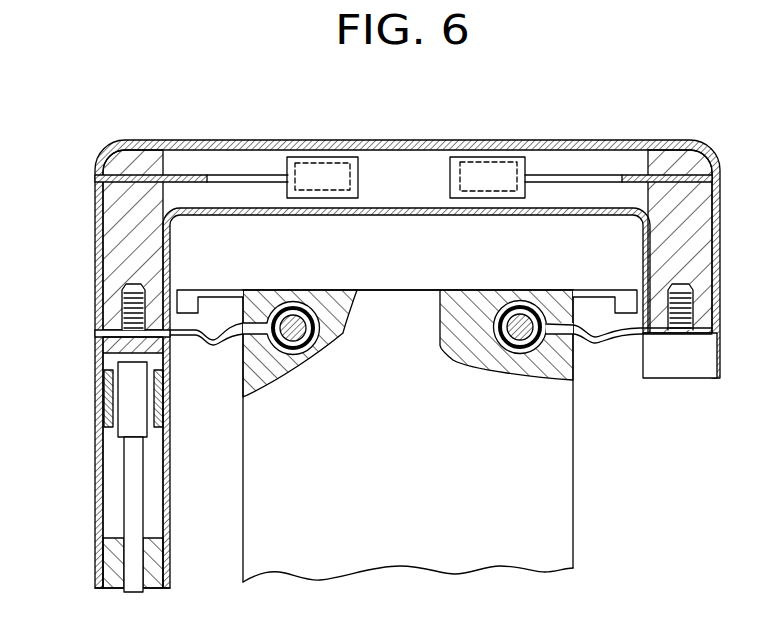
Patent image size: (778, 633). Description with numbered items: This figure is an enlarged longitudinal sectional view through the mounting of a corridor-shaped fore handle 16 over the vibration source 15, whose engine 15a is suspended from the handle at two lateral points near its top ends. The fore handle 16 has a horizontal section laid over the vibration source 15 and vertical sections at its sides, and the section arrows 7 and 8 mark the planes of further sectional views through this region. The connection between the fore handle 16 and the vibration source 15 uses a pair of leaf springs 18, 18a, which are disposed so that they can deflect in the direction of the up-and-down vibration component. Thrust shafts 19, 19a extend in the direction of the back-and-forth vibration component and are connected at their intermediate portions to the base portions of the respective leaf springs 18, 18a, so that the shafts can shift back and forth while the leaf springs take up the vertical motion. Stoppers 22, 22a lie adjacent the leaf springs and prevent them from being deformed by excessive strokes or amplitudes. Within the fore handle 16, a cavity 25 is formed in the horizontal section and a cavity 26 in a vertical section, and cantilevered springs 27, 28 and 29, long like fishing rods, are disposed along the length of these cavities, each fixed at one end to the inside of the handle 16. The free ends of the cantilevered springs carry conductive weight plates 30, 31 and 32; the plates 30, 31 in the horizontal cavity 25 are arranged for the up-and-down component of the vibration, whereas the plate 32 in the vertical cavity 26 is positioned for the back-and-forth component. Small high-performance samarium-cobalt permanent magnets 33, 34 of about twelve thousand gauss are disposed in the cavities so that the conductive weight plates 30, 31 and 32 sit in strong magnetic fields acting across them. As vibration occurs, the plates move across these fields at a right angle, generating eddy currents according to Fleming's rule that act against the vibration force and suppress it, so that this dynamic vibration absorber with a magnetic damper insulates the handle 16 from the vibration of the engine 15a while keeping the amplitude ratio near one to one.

The section line 7- 7 is at (457, 356).
The section line 8- 8 is at (288, 105).
The vibration source 15 is at (552, 493).
The engine 15a is at (413, 310).
The fore handle 16 is at (622, 143).
The leaf spring 18 is at (597, 344).
The leaf spring 18a is at (208, 344).
The thrust shaft 19 is at (520, 325).
The thrust shaft 19a is at (291, 326).
The stopper 22 is at (617, 298).
The stopper 22a is at (200, 294).
The cavity 25 is at (423, 163).
The cavity 26 is at (152, 487).
The cantilevered spring 27 is at (563, 177).
The cantilevered spring 28 is at (240, 173).
The cantilevered spring 29 is at (133, 512).
The conductive weight plate 30 is at (455, 162).
The conductive weight plate 31 is at (358, 178).
The conductive weight plate 32 is at (127, 422).
The permanent magnet 33 is at (325, 177).
The permanent magnet 34 is at (110, 387).